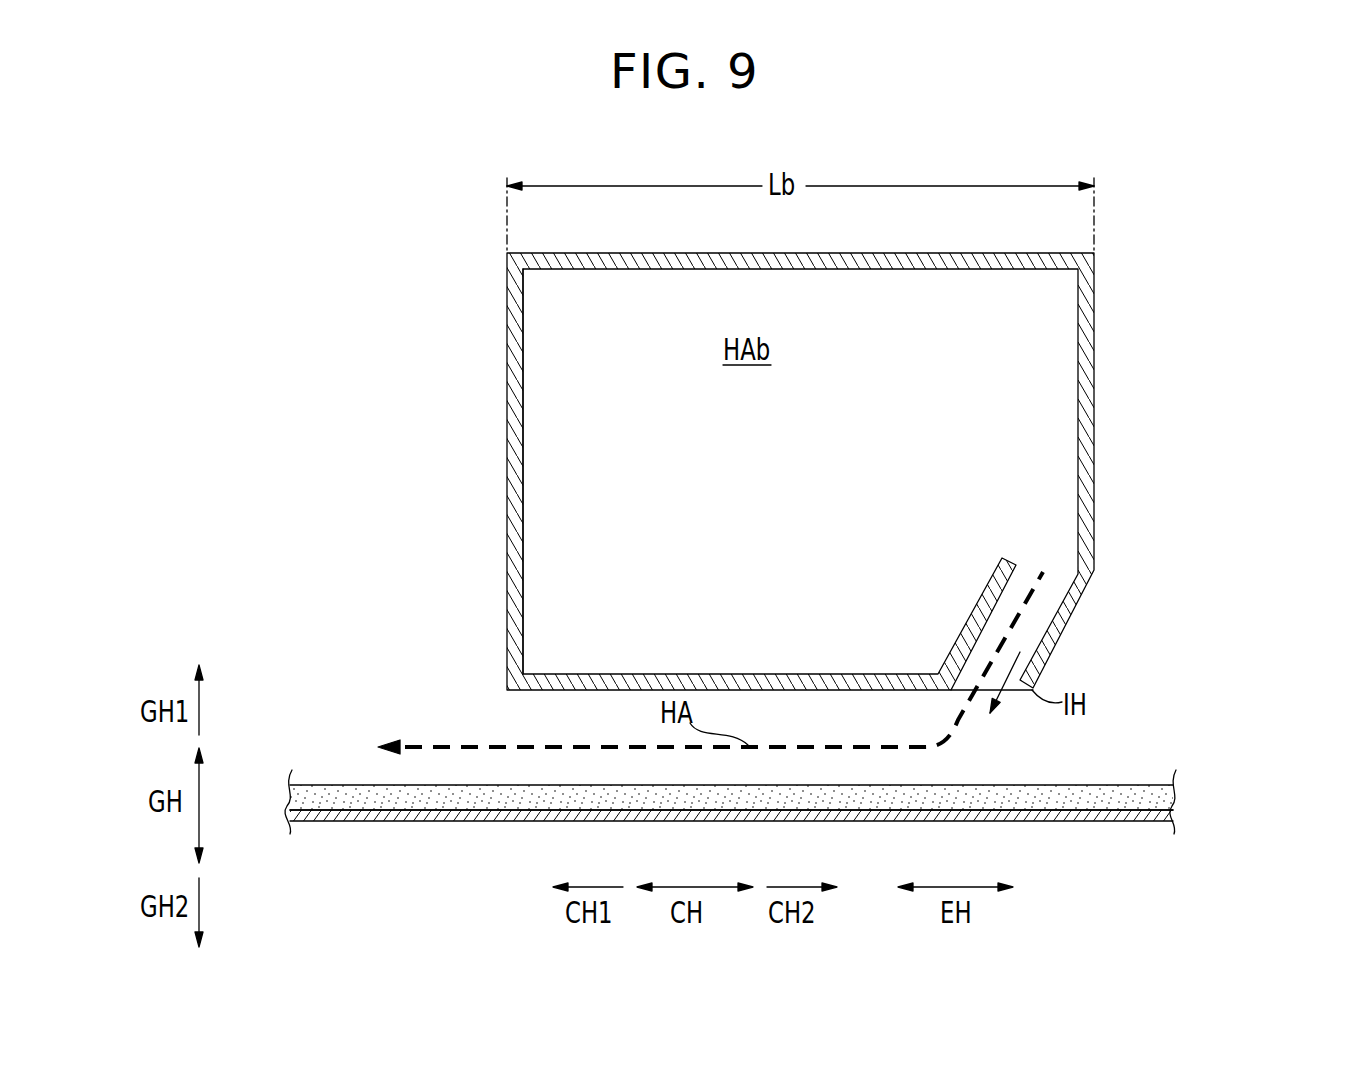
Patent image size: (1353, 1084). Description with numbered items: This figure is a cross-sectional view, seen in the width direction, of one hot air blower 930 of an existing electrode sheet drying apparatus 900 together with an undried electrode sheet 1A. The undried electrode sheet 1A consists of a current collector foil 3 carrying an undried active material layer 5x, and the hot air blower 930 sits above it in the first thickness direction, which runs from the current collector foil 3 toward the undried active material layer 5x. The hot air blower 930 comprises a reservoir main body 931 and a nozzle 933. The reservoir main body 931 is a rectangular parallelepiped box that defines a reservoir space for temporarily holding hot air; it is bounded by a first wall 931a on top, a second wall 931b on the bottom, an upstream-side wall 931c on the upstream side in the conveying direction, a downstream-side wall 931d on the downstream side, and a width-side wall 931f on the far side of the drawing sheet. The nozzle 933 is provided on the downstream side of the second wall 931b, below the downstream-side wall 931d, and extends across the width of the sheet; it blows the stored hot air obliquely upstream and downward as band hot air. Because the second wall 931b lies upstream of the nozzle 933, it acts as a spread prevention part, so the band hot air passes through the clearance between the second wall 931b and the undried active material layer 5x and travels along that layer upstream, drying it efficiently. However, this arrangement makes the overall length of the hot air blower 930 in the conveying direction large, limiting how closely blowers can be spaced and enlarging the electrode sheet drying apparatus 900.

The electrode sheet drying apparatus 900 is at (833, 447).
The hot air blower 930 is at (833, 447).
The reservoir main body 931 is at (813, 447).
The first wall 931a is at (862, 253).
The second wall 931b is at (745, 680).
The upstream-side wall 931c is at (508, 476).
The downstream-side wall 931d is at (1096, 463).
The width-side wall 931f is at (570, 380).
The nozzle 933 is at (1066, 641).
The undried active material layer 5x is at (1057, 784).
The undried electrode sheet 1A is at (1118, 797).
The current collector foil 3 is at (1053, 821).